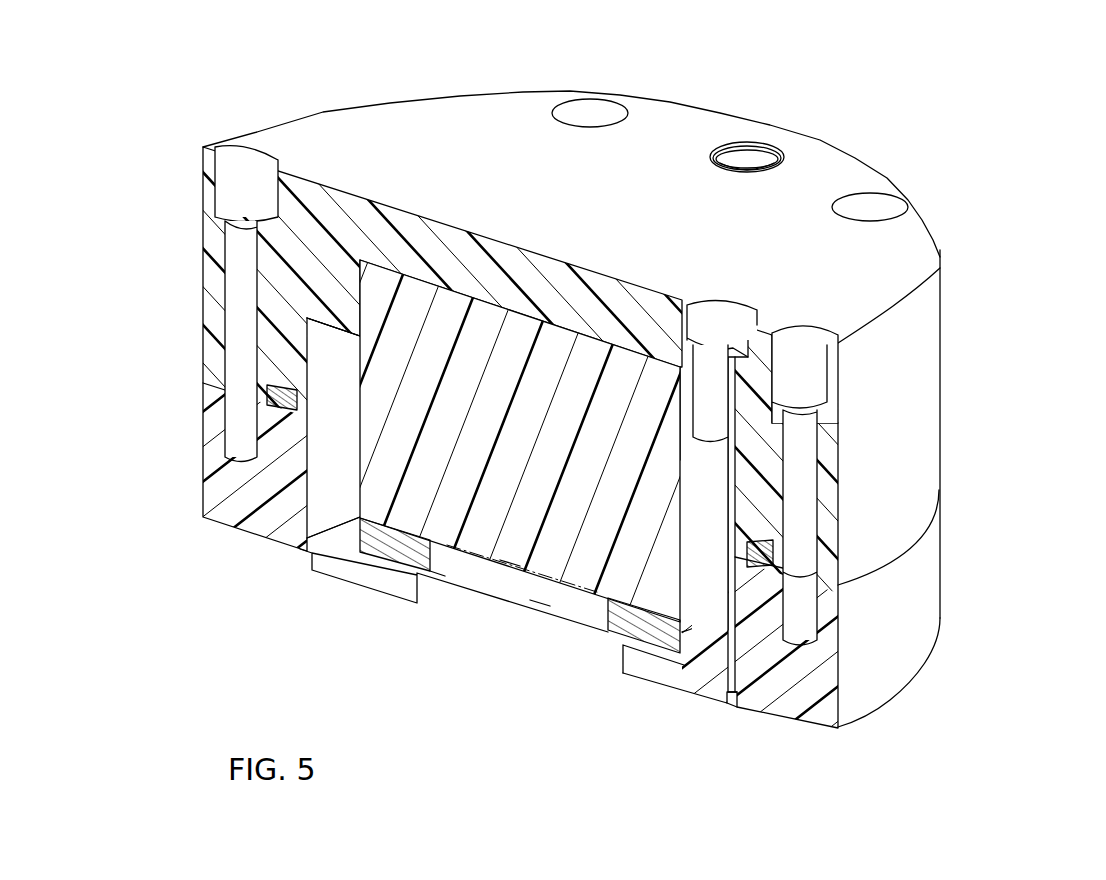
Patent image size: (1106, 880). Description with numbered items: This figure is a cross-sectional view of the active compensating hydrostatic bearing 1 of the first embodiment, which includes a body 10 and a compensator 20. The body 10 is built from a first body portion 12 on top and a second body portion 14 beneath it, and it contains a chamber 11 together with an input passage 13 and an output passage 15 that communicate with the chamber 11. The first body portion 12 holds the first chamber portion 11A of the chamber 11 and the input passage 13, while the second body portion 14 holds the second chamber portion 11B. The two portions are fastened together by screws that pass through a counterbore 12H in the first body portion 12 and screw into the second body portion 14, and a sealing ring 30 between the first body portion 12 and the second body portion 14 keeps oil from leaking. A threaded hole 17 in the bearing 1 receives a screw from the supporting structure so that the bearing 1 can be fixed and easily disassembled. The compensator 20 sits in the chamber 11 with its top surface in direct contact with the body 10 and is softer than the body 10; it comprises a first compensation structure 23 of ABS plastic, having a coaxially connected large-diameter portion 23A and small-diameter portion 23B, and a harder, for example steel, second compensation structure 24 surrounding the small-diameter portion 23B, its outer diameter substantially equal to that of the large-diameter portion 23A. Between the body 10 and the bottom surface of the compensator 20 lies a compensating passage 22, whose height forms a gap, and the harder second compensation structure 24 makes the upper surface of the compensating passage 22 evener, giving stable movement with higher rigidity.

The active compensating hydrostatic bearing 1 is at (998, 188).
The body 10 is at (553, 440).
The chamber 11 is at (128, 350).
The first chamber portion 11A is at (335, 400).
The second chamber portion 11B is at (330, 440).
The first body portion 12 is at (930, 463).
The counterbore 12H is at (253, 155).
The input passage 13 is at (730, 312).
The second body portion 14 is at (928, 608).
The output passage 15 is at (587, 643).
The threaded hole 17 is at (750, 147).
The compensator 20 is at (302, 625).
The compensating passage 22 is at (652, 650).
The first compensation structure 23 is at (342, 645).
The large-diameter portion 23A is at (517, 553).
The small-diameter portion 23B is at (538, 593).
The second compensation structure 24 is at (370, 560).
The sealing ring 30 is at (763, 570).